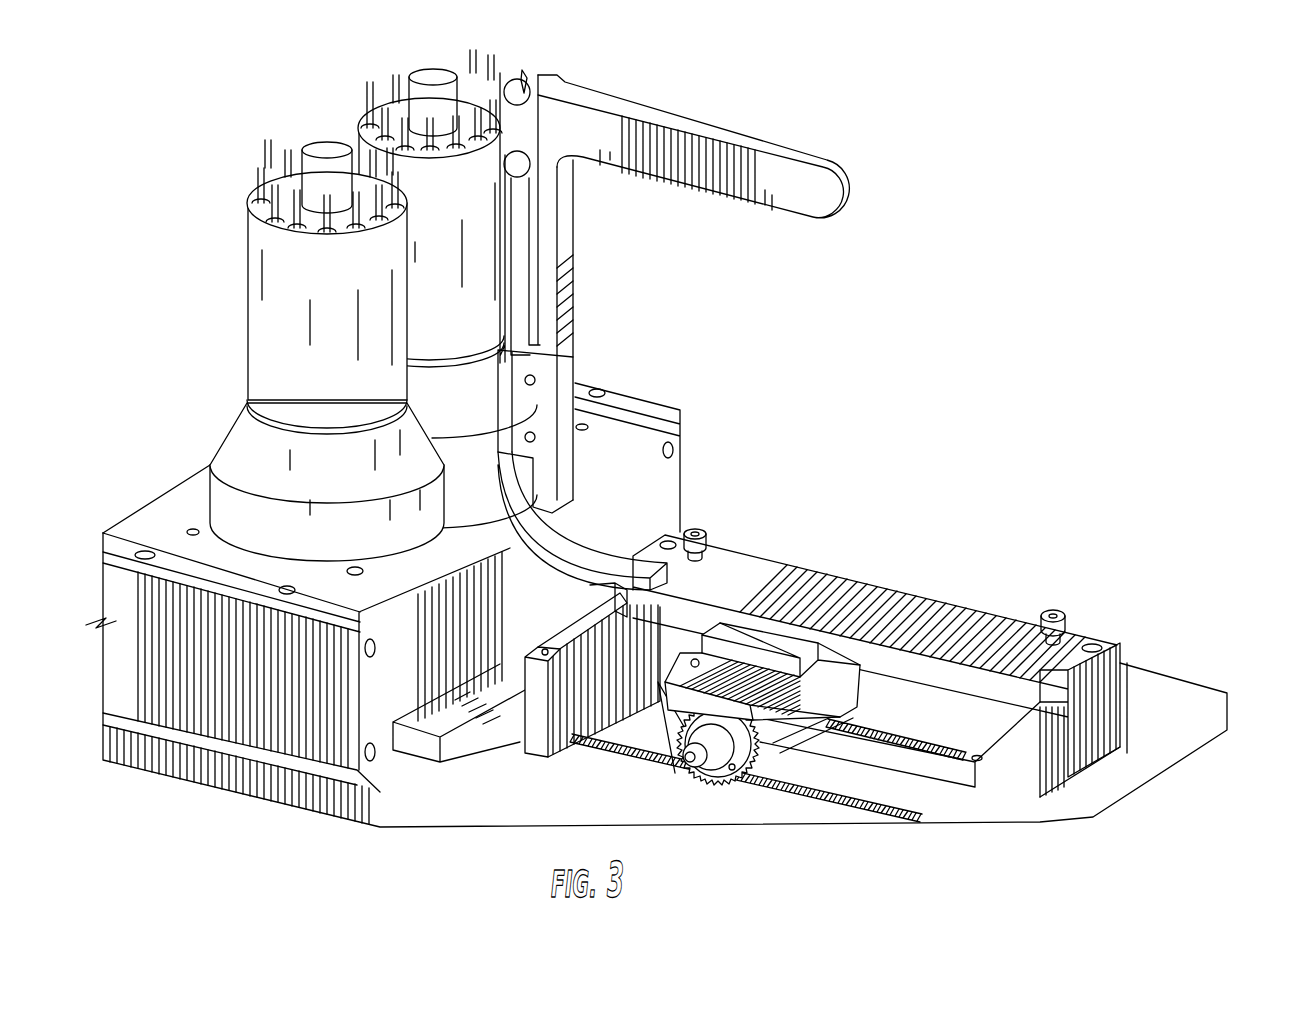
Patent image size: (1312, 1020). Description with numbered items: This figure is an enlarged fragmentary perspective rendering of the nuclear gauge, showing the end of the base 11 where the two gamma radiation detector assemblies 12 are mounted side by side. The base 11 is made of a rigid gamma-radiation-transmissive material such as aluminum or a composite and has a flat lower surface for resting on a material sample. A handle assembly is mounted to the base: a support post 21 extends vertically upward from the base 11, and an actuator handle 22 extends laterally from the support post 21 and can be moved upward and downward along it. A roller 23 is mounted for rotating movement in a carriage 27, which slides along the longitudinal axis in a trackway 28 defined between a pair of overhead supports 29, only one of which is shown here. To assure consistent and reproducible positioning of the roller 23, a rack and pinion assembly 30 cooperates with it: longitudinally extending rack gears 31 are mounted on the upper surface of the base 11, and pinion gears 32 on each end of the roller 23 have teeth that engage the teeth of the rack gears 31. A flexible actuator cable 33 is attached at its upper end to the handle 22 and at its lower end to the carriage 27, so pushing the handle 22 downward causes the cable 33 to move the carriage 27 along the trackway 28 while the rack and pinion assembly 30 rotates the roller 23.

The base 11 is at (1205, 725).
The gamma radiation detector assembly 12 is at (352, 103).
The support post 21 is at (566, 262).
The actuator handle 22 is at (822, 180).
The roller 23 is at (808, 743).
The carriage 27 is at (655, 718).
The trackway 28 is at (772, 628).
The overhead support 29 is at (910, 607).
The rack and pinion assembly 30 is at (722, 792).
The rack gear 31 is at (938, 772).
The pinion gear 32 is at (765, 765).
The flexible actuator cable 33 is at (552, 563).